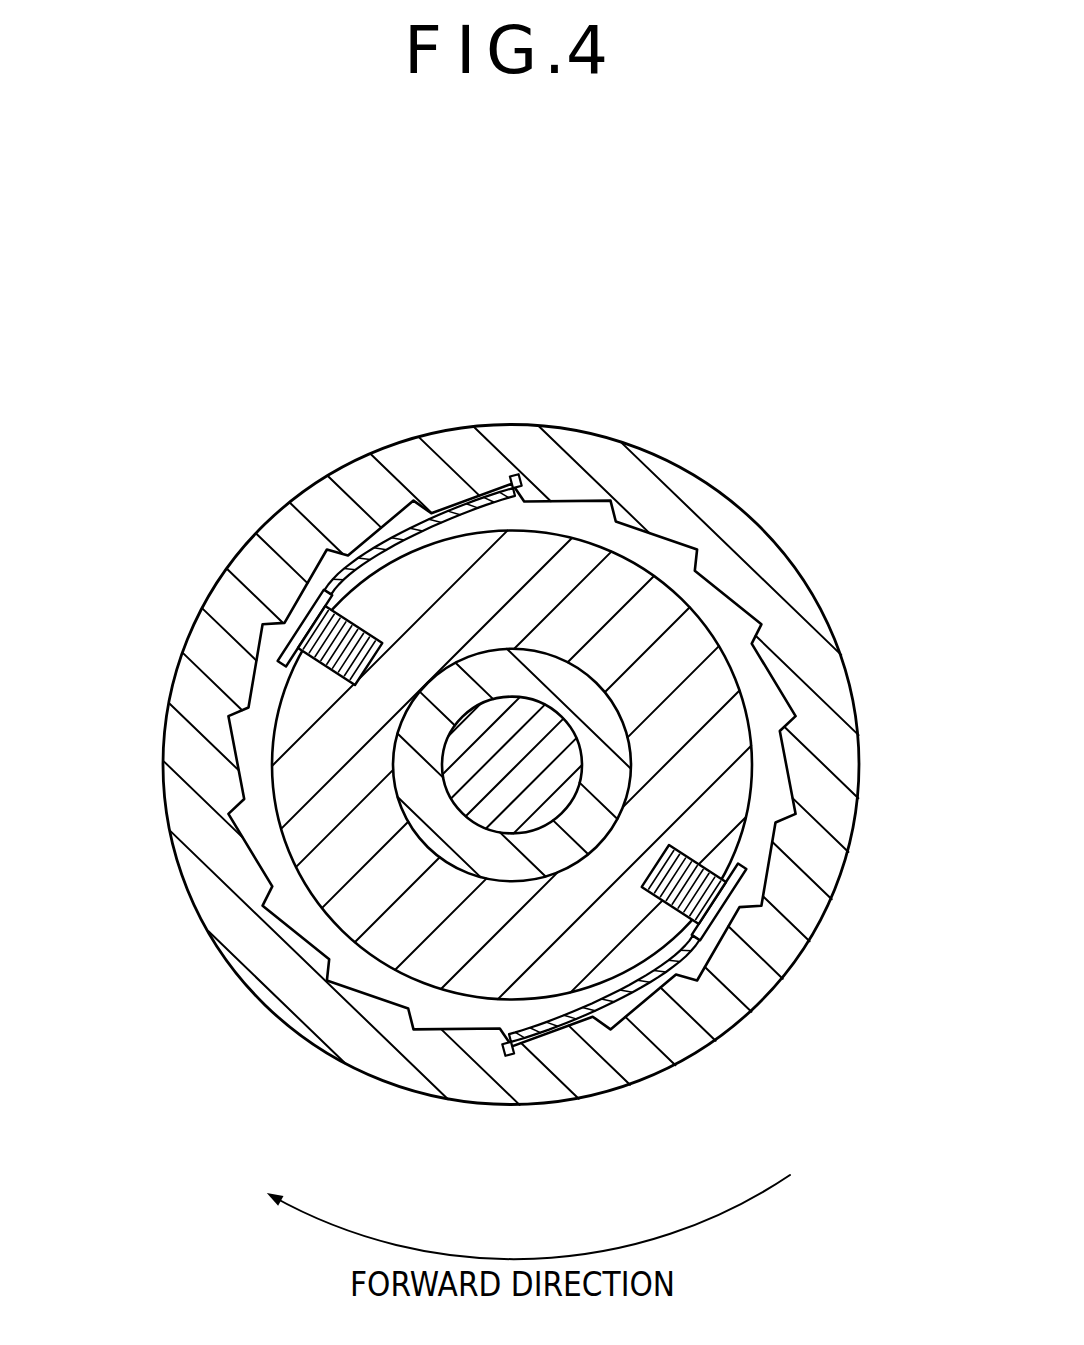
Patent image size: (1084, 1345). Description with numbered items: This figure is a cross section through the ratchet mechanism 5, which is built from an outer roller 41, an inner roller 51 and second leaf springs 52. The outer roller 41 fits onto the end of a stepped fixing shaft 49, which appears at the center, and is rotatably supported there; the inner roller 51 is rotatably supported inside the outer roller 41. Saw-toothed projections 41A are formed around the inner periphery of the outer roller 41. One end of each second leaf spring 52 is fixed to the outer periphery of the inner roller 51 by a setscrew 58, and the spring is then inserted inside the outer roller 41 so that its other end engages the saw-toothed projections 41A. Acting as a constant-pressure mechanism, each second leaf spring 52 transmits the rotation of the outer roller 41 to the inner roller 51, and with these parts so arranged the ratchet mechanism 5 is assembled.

The ratchet mechanism 5 is at (860, 348).
The outer roller 41 is at (676, 463).
The saw-toothed projections 41A is at (212, 950).
The stepped fixing shaft 49 is at (572, 672).
The inner roller 51 is at (752, 703).
The second leaf spring 52 is at (391, 538).
The setscrew 58 is at (284, 623).